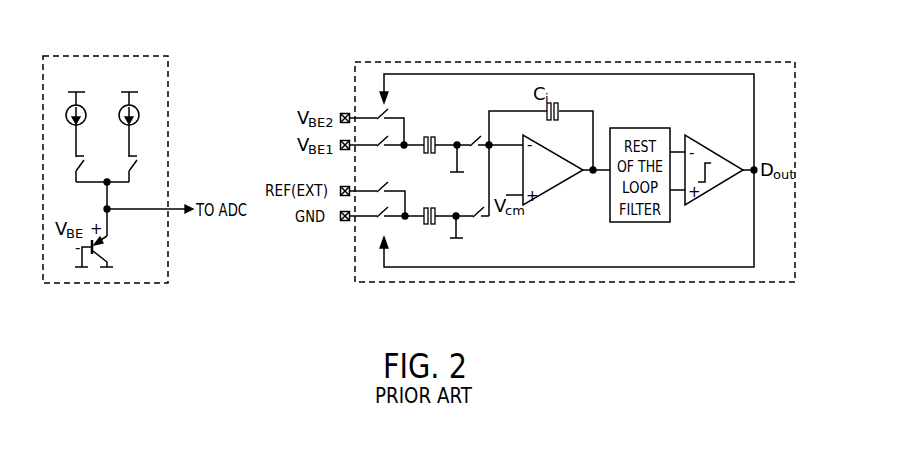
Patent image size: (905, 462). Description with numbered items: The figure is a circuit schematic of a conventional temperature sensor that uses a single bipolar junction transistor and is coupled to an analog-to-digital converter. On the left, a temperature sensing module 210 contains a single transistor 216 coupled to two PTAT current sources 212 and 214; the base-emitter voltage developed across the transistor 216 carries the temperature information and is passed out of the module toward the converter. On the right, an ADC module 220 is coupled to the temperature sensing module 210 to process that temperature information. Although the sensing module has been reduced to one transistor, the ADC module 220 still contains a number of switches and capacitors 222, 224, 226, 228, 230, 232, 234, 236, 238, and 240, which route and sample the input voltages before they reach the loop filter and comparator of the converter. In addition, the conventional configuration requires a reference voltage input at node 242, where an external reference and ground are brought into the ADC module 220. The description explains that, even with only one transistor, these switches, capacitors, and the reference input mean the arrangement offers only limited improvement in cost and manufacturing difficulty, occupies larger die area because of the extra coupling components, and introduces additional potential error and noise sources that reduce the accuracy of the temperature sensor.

The temperature sensing module 210 is at (94, 55).
The PTAT current source 212 is at (81, 107).
The PTAT current source 214 is at (134, 107).
The transistor 216 is at (104, 234).
The ADC module 220 is at (507, 60).
The switch 222 is at (388, 111).
The switch 224 is at (390, 138).
The switch 226 is at (388, 186).
The switch 228 is at (388, 210).
The switch or capacitor 230 is at (458, 162).
The switch or capacitor 232 is at (464, 240).
The switch 234 is at (467, 143).
The switch 236 is at (482, 209).
The capacitor 238 is at (423, 149).
The capacitor 240 is at (422, 225).
The node 242 is at (342, 198).